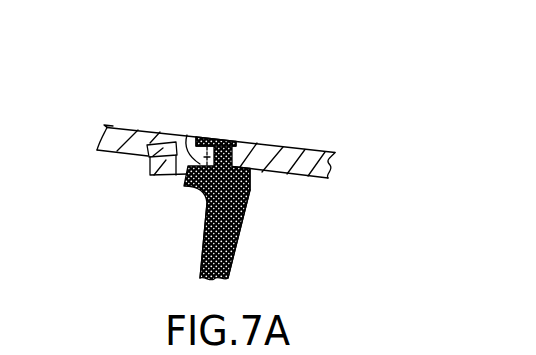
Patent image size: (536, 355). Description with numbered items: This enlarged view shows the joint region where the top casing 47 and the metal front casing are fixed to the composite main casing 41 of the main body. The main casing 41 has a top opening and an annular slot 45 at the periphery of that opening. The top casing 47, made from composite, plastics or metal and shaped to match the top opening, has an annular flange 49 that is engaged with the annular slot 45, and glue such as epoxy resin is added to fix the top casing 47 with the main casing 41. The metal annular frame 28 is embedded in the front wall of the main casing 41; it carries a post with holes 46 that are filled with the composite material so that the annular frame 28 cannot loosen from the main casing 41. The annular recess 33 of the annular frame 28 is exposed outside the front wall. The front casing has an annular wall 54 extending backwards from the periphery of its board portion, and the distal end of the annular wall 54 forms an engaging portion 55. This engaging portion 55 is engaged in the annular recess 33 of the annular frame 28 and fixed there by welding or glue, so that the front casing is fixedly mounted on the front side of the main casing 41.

The annular wall 54 is at (127, 125).
The annular frame 28 is at (170, 132).
The holes 46 is at (185, 133).
The main casing 41 is at (223, 135).
The top casing 47 is at (292, 138).
The annular flange 49 is at (248, 185).
The annular slot 45 is at (237, 228).
The engaging portion 55 is at (147, 160).
The annular recess 33 is at (160, 177).